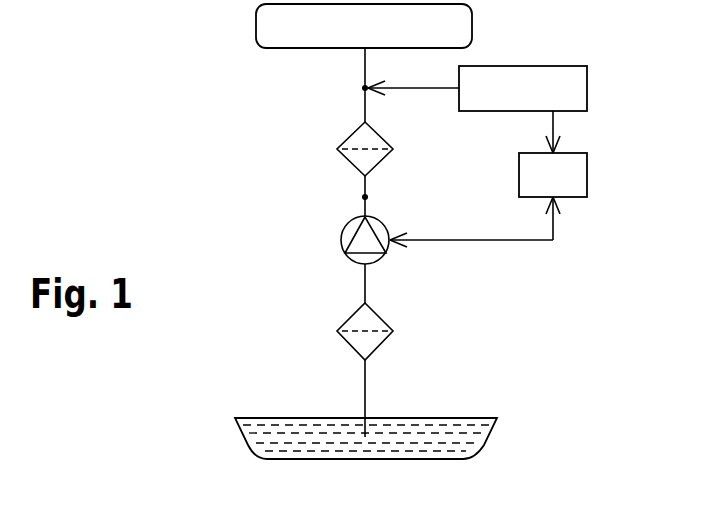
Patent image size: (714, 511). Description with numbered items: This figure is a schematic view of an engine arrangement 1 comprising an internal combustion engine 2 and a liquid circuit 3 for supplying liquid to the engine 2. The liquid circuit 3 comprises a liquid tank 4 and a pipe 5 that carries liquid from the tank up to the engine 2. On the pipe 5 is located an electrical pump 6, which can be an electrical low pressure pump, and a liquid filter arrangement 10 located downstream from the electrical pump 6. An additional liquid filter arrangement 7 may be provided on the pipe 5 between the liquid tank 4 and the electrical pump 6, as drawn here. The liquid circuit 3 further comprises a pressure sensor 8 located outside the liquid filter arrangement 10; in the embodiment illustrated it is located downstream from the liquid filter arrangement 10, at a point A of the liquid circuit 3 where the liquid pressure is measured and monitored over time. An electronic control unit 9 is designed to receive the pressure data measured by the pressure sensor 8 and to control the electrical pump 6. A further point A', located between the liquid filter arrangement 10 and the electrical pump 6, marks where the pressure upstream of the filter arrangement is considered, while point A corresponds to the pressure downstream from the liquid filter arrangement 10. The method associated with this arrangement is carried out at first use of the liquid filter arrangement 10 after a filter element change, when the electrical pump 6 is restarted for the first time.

The engine arrangement 1 is at (155, 158).
The internal combustion engine 2 is at (373, 40).
The liquid circuit 3 is at (342, 290).
The liquid tank 4 is at (243, 444).
The pipe 5 is at (366, 393).
The electrical pump 6 is at (341, 246).
The additional liquid filter arrangement 7 is at (349, 346).
The pressure sensor 8 is at (531, 98).
The electronic control unit 9 is at (561, 186).
The liquid filter arrangement 10 is at (348, 137).
The point A is at (352, 90).
The point A' is at (379, 198).